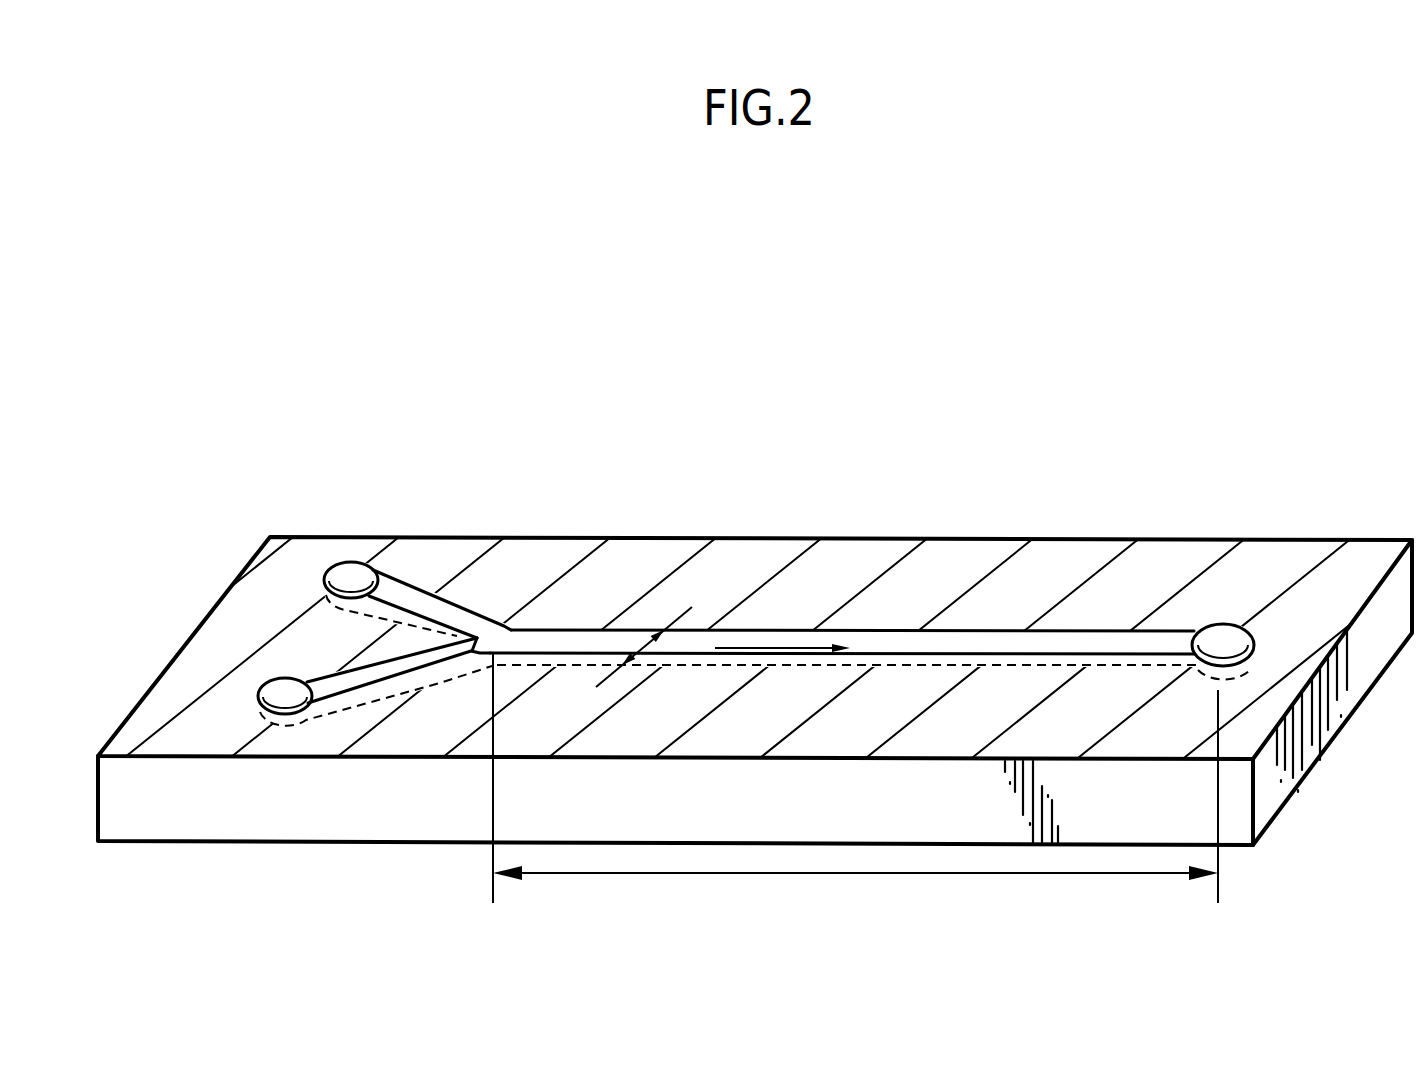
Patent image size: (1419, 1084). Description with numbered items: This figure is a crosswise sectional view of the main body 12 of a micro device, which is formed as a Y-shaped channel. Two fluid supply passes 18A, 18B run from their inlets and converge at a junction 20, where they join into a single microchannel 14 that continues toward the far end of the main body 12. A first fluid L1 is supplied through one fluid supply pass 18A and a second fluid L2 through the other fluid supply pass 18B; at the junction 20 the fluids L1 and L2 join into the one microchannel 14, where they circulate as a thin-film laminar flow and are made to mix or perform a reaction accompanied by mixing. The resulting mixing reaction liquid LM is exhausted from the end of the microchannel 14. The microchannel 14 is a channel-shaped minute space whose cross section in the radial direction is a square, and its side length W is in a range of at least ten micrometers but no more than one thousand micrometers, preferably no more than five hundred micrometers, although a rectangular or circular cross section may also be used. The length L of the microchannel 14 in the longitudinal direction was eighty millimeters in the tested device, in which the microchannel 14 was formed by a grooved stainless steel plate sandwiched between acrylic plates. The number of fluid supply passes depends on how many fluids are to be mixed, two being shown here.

The main body of the micro device 12 is at (1209, 319).
The microchannel 14 is at (1033, 630).
The fluid supply pass 18A is at (402, 583).
The fluid supply pass 18B is at (363, 685).
The junction 20 is at (499, 622).
The fluid L1 is at (285, 688).
The fluid L2 is at (352, 572).
The mixing reaction liquid LM is at (1224, 648).
The side length W is at (664, 620).
The length L is at (855, 790).